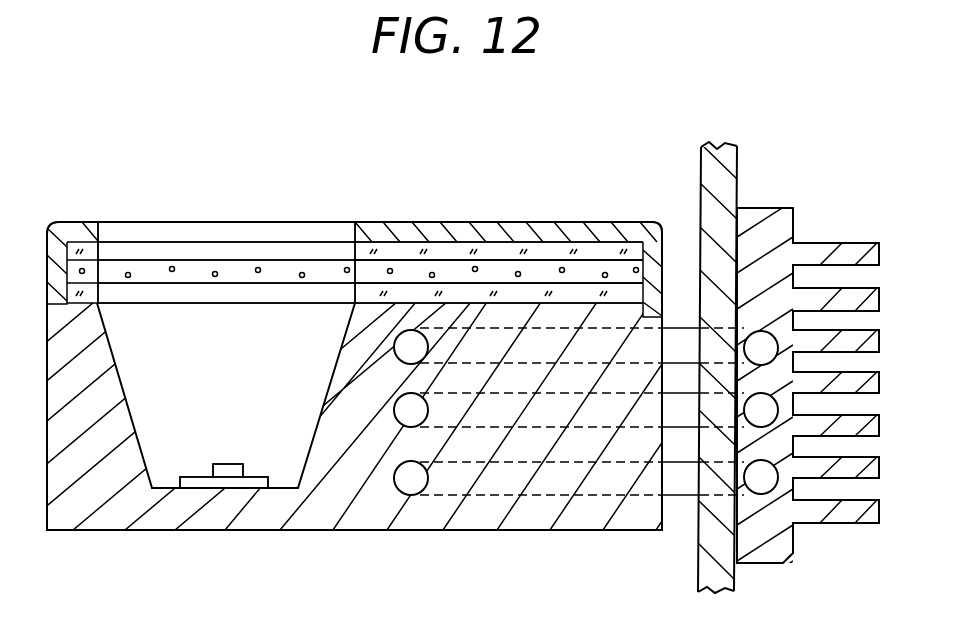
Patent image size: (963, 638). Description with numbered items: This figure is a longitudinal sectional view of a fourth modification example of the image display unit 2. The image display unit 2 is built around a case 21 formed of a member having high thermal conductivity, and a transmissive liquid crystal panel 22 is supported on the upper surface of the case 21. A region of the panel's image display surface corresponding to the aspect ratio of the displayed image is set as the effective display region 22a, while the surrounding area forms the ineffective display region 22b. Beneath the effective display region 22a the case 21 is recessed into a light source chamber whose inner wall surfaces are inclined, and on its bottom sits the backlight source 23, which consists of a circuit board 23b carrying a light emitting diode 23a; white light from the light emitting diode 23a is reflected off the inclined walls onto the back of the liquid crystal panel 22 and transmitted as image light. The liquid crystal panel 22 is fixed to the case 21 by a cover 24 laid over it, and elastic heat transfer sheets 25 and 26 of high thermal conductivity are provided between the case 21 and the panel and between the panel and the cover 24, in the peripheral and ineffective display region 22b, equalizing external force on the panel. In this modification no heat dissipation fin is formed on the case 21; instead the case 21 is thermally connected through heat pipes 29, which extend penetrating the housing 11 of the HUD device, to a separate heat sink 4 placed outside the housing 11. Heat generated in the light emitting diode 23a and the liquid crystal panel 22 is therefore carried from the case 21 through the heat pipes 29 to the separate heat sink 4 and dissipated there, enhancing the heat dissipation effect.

The image display unit 2 is at (527, 149).
The separate heat sink 4 is at (767, 220).
The housing 11 is at (721, 150).
The case 21 is at (590, 517).
The liquid crystal panel 22 is at (127, 263).
The effective display region 22a is at (207, 270).
The ineffective display region 22b is at (437, 267).
The backlight source 23 is at (213, 452).
The light emitting diode 23a is at (230, 472).
The circuit board 23b is at (240, 483).
The cover 24 is at (372, 230).
The heat transfer sheet 25 is at (587, 292).
The heat transfer sheet 26 is at (518, 247).
The heat pipe 29 is at (460, 407).